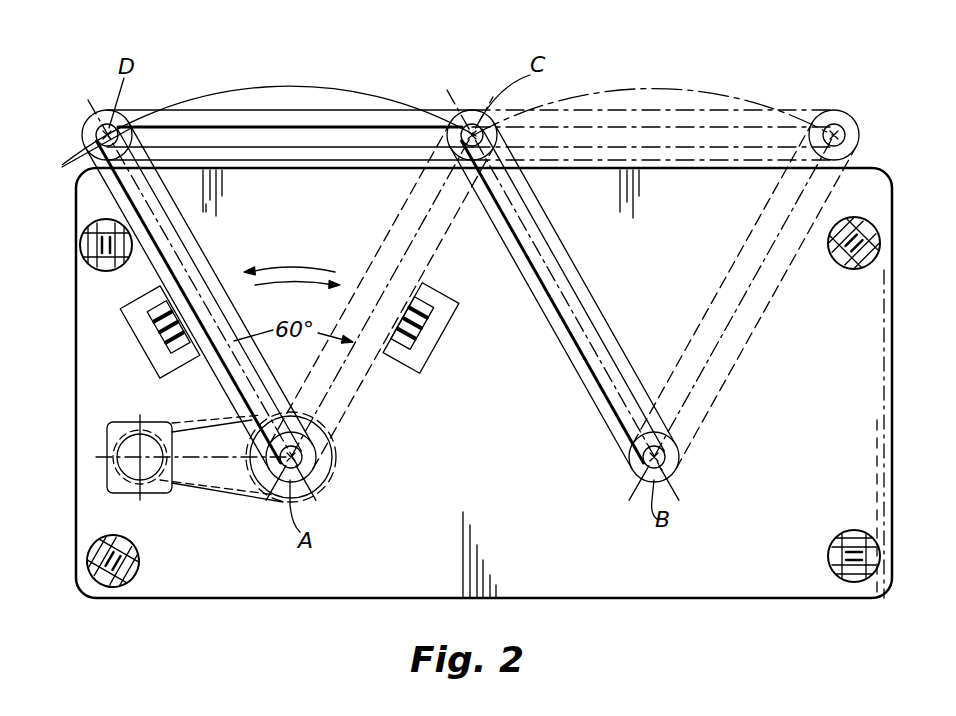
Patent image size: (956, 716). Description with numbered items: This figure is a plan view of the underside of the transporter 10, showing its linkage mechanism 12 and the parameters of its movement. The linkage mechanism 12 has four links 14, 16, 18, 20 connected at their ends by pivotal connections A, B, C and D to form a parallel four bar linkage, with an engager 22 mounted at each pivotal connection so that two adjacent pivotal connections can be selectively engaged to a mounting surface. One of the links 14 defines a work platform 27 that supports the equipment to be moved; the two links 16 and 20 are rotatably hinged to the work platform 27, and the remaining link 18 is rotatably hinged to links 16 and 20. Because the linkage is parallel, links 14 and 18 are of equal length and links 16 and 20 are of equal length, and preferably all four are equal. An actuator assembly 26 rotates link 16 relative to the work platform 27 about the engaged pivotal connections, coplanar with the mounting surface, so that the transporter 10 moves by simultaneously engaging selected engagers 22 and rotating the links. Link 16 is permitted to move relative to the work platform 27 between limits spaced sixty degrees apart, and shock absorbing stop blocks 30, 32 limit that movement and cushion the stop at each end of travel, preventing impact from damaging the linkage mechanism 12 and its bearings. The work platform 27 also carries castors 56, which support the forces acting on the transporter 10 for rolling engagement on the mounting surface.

The transporter 10 is at (352, 628).
The linkage mechanism 12 is at (365, 75).
The link 14 is at (600, 575).
The link 16 is at (190, 248).
The link 18 is at (262, 144).
The link 20 is at (572, 255).
The engager 22 is at (78, 110).
The actuator assembly 26 is at (135, 405).
The work platform 27 is at (484, 416).
The shock absorbing stop block 30 is at (432, 333).
The shock absorbing stop block 32 is at (145, 338).
The castor 56 is at (102, 272).